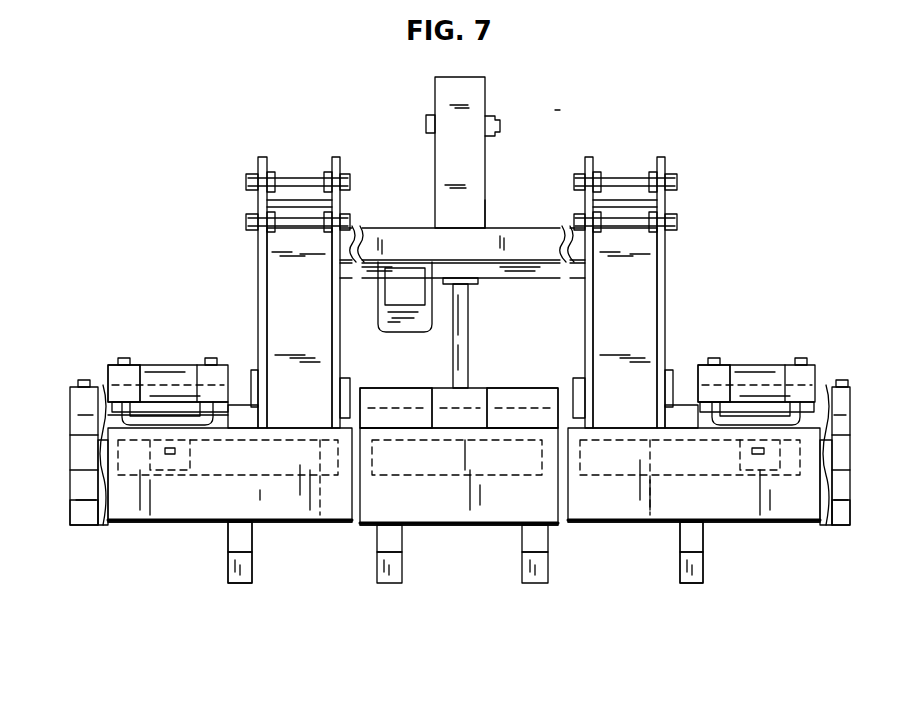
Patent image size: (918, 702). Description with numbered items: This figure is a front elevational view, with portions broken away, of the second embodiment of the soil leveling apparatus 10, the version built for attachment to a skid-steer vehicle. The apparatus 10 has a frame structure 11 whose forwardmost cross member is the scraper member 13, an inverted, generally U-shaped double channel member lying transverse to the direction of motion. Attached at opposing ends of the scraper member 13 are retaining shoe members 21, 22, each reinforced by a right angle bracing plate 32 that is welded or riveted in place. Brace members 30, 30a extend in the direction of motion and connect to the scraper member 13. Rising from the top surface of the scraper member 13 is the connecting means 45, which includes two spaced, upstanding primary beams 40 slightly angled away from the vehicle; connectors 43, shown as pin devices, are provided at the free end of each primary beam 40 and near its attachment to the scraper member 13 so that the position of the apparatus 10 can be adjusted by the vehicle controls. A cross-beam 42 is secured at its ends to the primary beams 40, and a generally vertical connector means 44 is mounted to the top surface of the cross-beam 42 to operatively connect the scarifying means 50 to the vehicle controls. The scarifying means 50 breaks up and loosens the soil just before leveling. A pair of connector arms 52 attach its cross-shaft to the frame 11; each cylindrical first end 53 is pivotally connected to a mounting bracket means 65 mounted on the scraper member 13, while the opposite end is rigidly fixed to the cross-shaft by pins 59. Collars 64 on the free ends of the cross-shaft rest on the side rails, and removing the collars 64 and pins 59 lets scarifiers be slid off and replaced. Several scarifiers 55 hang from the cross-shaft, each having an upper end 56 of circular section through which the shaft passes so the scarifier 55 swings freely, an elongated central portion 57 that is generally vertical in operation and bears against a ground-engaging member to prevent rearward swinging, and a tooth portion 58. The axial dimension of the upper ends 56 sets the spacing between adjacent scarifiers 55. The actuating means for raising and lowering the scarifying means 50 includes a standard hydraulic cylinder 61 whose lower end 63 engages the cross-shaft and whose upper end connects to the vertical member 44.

The soil leveling apparatus 10 is at (574, 108).
The frame structure 11 is at (470, 536).
The scraper member 13 is at (495, 513).
The retaining shoe member 21 is at (78, 528).
The retaining shoe member 22 is at (838, 525).
The brace member 30 is at (650, 520).
The frame bracing member 30a is at (318, 520).
The bracing plate 32 is at (100, 527).
The primary beam 40 is at (258, 272).
The cross-beam 42 is at (396, 240).
The connectors 43 is at (289, 200).
The vertical connector means 44 is at (438, 165).
The connecting means 45 is at (511, 193).
The scarifying means 50 is at (519, 381).
The connector arm 52 is at (169, 361).
The first end 53 is at (151, 363).
The scarifier 55 is at (222, 584).
The upper end 56 is at (388, 394).
The central portion 57 is at (233, 542).
The tooth portion 58 is at (234, 583).
The pins 59 is at (162, 455).
The hydraulic cylinder 61 is at (470, 280).
The lower end 63 is at (438, 394).
The collars 64 is at (80, 387).
The mounting bracket means 65 is at (117, 357).